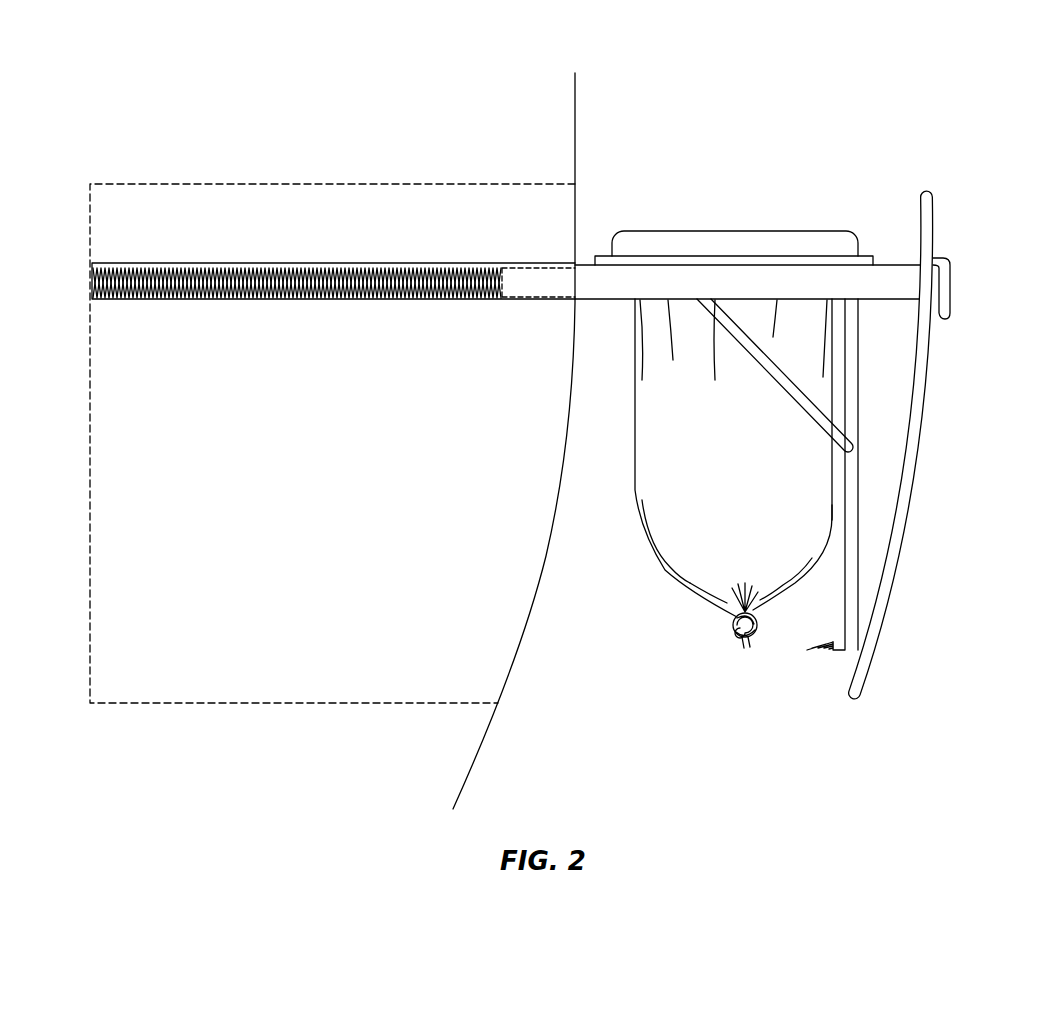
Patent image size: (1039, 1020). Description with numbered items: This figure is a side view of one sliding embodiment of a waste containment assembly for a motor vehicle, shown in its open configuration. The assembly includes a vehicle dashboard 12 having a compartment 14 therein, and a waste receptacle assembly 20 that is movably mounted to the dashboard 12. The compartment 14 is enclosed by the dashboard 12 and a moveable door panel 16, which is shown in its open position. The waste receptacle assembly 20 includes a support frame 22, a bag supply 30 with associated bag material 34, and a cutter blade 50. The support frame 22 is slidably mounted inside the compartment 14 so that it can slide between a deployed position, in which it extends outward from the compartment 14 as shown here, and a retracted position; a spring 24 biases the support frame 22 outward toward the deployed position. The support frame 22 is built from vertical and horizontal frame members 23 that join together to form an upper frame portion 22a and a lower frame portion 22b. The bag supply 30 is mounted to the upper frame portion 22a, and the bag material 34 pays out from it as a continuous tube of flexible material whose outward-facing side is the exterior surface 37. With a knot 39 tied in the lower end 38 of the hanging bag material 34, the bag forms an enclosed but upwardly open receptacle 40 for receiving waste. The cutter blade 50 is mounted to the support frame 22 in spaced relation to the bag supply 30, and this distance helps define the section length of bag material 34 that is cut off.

The vehicle dashboard 12 is at (578, 127).
The compartment 14 is at (523, 222).
The door panel 16 is at (908, 532).
The waste receptacle assembly 20 is at (794, 409).
The support frame 22 is at (832, 282).
The upper frame portion 22a is at (795, 258).
The lower frame portion 22b is at (853, 558).
The frame members 23 is at (813, 407).
The spring 24 is at (193, 283).
The bag supply 30 is at (710, 243).
The bag material 34 is at (657, 475).
The exterior surface 37 is at (688, 515).
The lower end 38 is at (728, 583).
The knot 39 is at (737, 633).
The receptacle 40 is at (836, 517).
The cutter blade 50 is at (820, 645).